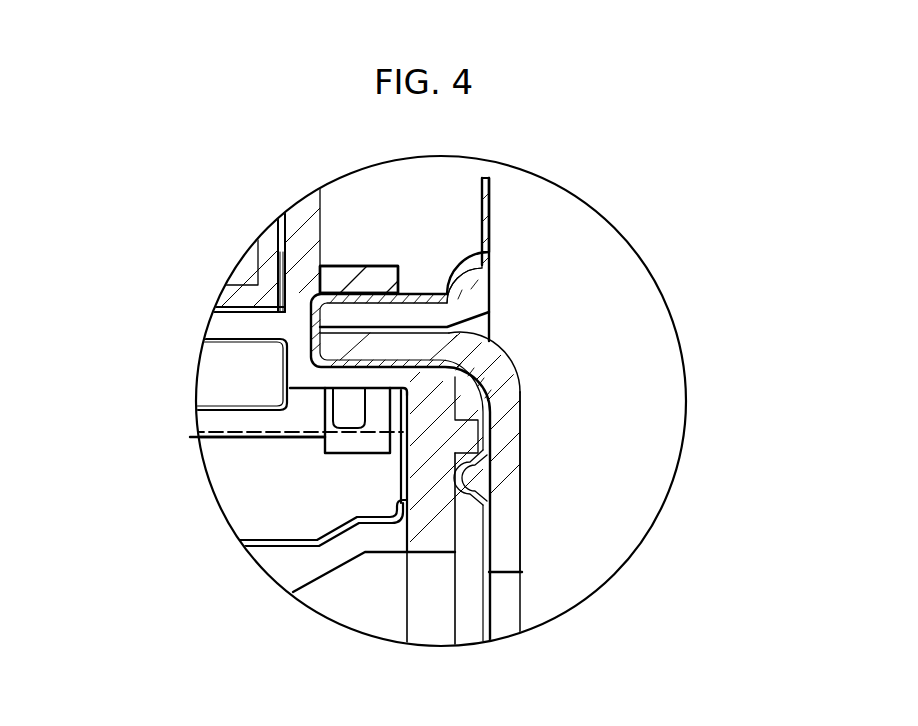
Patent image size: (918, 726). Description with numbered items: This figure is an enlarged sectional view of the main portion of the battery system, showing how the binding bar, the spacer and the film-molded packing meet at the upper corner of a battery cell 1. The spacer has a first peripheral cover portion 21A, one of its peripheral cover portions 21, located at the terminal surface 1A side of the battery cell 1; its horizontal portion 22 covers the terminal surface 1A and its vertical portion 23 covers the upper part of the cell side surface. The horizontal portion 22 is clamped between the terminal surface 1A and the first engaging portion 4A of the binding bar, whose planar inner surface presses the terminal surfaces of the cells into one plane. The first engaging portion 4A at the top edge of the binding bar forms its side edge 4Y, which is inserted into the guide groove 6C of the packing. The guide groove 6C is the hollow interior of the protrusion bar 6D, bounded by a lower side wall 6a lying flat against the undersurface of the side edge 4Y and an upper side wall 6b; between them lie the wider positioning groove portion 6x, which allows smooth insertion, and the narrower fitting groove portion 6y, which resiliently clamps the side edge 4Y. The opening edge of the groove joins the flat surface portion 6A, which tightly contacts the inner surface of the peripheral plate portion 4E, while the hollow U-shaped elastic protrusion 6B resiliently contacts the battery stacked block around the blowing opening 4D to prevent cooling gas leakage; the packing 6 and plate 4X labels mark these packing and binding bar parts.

The battery cell 1 is at (360, 607).
The terminal surface 1A is at (252, 415).
The first engaging portion 4A is at (410, 297).
The side edge 4Y is at (410, 297).
The blowing opening 4D is at (522, 609).
The peripheral plate portion 4E is at (502, 478).
The frame side wall 4X is at (502, 478).
The seal member 6 is at (520, 215).
The flat surface portion 6A is at (513, 415).
The elastic protrusion 6B is at (500, 435).
The guide groove 6C is at (492, 330).
The protrusion bar 6D is at (328, 292).
The lower side wall 6a is at (500, 349).
The upper side wall 6b is at (400, 345).
The positioning groove portion 6x is at (452, 300).
The fitting groove portion 6y is at (357, 312).
The first peripheral cover portion 21A is at (135, 458).
The peripheral cover portion 21 is at (183, 547).
The horizontal portion 22 is at (358, 378).
The vertical portion 23 is at (440, 480).